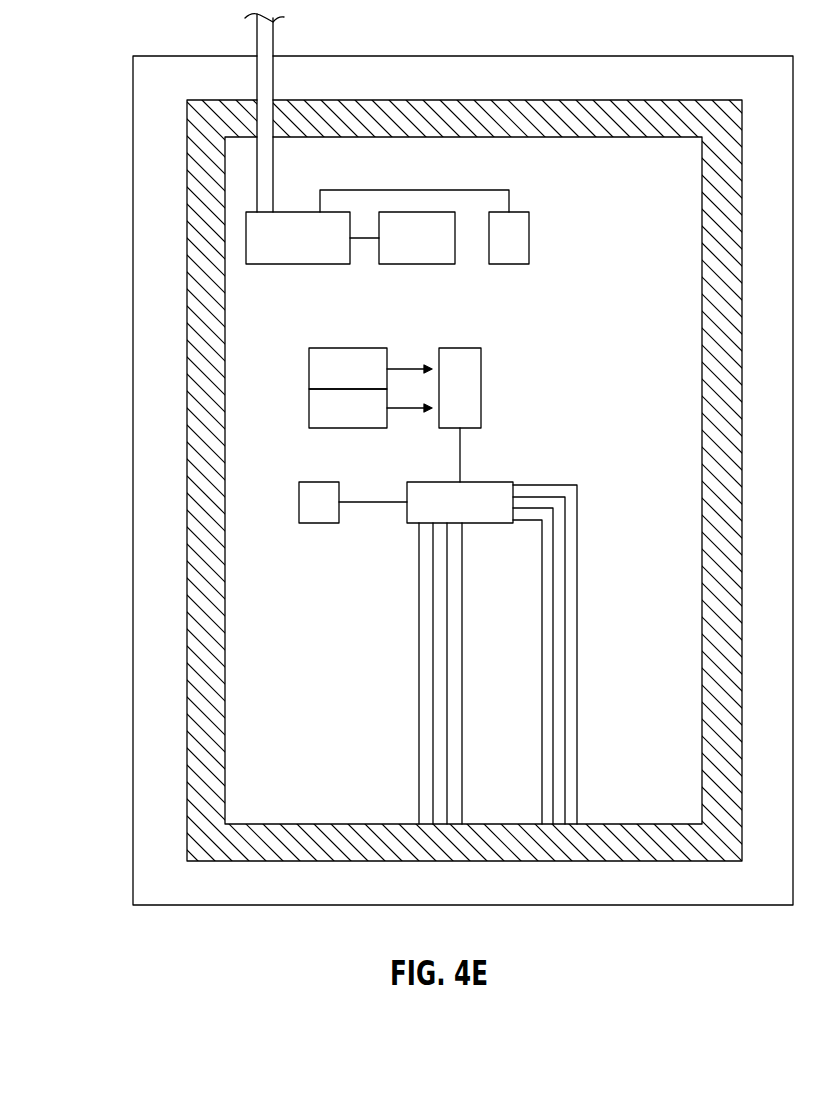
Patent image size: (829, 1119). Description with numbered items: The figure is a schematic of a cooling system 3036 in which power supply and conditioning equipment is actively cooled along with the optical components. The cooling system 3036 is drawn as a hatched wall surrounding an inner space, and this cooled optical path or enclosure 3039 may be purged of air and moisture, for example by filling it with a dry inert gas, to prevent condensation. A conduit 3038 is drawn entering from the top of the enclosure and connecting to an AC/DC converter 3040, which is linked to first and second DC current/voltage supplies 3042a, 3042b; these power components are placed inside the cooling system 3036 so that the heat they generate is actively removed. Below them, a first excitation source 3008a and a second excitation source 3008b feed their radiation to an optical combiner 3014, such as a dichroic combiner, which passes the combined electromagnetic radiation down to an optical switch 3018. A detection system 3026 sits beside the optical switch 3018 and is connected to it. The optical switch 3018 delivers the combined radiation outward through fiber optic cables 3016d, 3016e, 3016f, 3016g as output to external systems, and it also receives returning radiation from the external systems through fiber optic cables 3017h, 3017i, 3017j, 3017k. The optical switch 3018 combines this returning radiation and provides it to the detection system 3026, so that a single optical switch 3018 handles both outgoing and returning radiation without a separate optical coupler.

The cooling system 3036 is at (208, 498).
The conduit 3038 is at (273, 44).
The enclosure 3039 is at (133, 753).
The AC/DC converter 3040 is at (298, 264).
The DC current/voltage supply 3042a is at (417, 264).
The DC current/voltage supply 3042b is at (509, 264).
The first excitation source 3008a is at (347, 348).
The second excitation source 3008b is at (347, 428).
The optical combiner 3014 is at (458, 348).
The detection system 3026 is at (318, 482).
The optical switch 3018 is at (490, 482).
The fiber optic cable 3016d is at (577, 527).
The fiber optic cable 3016e is at (565, 578).
The fiber optic cable 3016f is at (553, 625).
The fiber optic cable 3016g is at (542, 675).
The fiber optic cable 3017h is at (419, 610).
The fiber optic cable 3017i is at (433, 658).
The fiber optic cable 3017j is at (447, 705).
The fiber optic cable 3017k is at (462, 753).